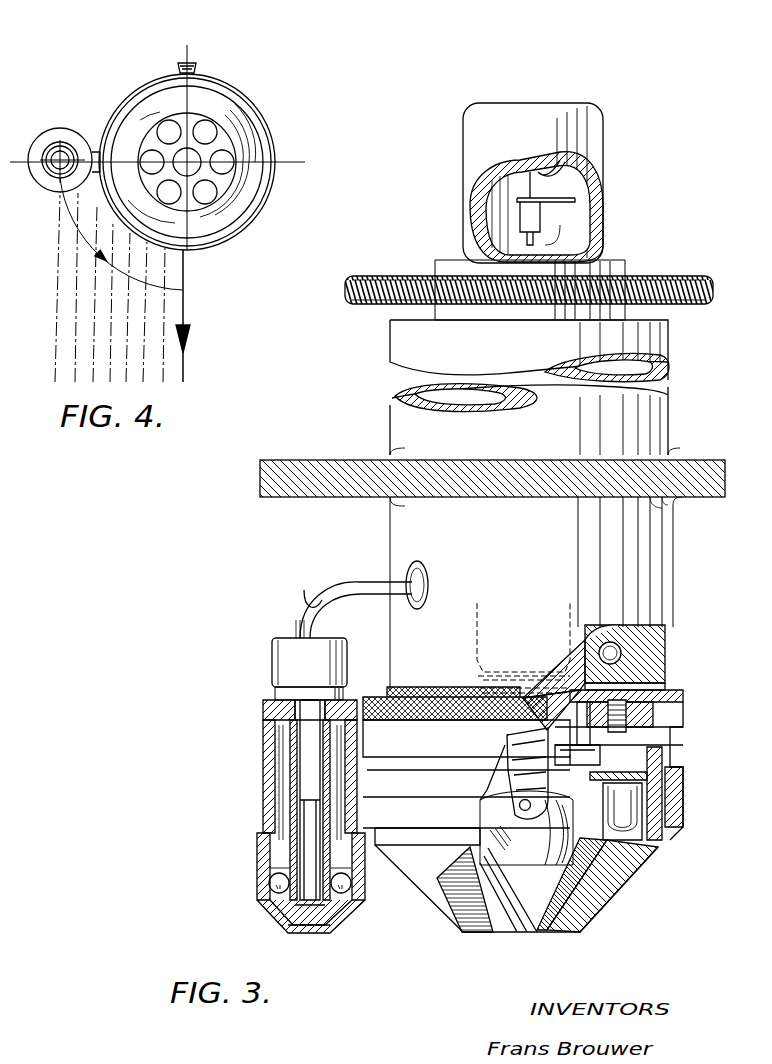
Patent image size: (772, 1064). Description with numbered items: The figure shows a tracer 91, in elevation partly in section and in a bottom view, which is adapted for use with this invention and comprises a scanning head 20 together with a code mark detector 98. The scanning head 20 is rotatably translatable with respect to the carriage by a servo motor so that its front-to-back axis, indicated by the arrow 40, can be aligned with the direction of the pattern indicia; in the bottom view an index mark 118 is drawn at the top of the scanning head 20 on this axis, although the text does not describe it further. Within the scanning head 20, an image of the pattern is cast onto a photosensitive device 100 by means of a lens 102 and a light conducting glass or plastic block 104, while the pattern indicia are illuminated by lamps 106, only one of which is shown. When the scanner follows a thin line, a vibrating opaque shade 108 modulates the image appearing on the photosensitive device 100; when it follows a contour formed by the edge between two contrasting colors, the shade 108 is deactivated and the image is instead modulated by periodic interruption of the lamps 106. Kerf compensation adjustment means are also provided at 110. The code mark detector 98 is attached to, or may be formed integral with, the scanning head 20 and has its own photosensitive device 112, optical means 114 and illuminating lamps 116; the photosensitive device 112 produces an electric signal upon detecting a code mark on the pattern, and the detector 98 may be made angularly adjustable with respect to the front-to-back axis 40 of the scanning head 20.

In FIG. 4, the scanning head 20 is at (268, 122).
In FIG. 3, the scanning head 20 is at (648, 250).
In FIG. 4, the front-to-back axis 40 is at (184, 284).
In FIG. 3, the tracer 91 is at (380, 446).
In FIG. 4, the code mark detector 98 is at (68, 124).
In FIG. 3, the code mark detector 98 is at (297, 785).
In FIG. 3, the photosensitive device 100 is at (520, 222).
In FIG. 3, the lens 102 is at (537, 733).
In FIG. 3, the light conducting glass or plastic block 104 is at (590, 860).
In FIG. 3, the lamps 106 is at (655, 849).
In FIG. 3, the vibrating opaque shade 108 is at (545, 240).
In FIG. 3, the kerf compensation adjustment means 110 is at (393, 695).
In FIG. 3, the photosensitive device 112 is at (266, 728).
In FIG. 3, the optical means 114 is at (312, 852).
In FIG. 3, the illuminating lamps 116 is at (268, 897).
In FIG. 4, the index mark 118 is at (197, 70).